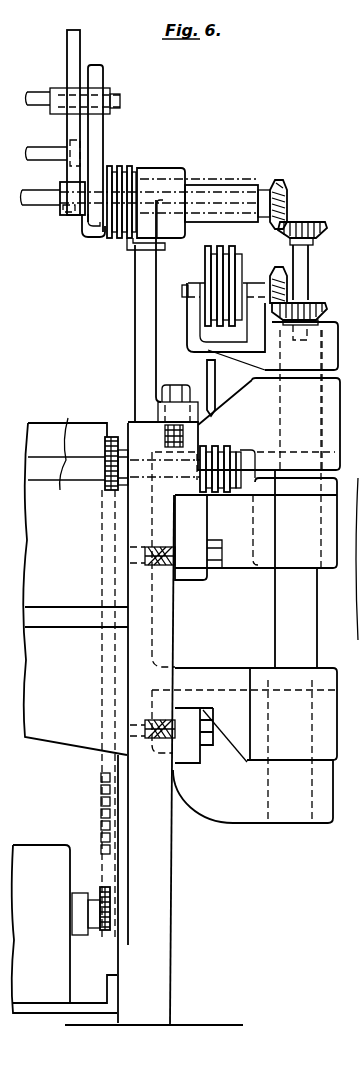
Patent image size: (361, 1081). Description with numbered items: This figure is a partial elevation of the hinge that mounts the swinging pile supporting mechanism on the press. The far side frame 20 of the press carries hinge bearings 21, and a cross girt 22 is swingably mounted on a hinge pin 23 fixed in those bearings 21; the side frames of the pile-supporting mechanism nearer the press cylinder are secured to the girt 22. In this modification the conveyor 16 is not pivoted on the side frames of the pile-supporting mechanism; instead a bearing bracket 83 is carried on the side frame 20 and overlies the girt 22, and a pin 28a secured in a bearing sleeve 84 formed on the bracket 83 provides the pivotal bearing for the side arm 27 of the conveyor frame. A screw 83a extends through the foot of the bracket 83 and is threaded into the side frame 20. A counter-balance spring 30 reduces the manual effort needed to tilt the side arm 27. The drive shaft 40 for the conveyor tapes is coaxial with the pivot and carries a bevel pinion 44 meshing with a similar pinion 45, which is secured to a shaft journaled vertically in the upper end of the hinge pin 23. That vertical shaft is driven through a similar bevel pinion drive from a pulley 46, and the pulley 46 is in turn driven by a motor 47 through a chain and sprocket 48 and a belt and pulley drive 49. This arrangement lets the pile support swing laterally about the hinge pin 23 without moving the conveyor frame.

The conveyor 16 is at (100, 75).
The side arm 27 is at (93, 127).
The counter-balance spring 30 is at (117, 164).
The pin 28a is at (142, 172).
The bearing sleeve 84 is at (165, 170).
The drive shaft 40 is at (44, 203).
The bevel pinion 44 is at (280, 189).
The bevel pinion 45 is at (320, 232).
The pulley 46 is at (221, 256).
The bearing bracket 83 is at (137, 305).
The screw 83a is at (176, 390).
The belt and pulley drive 49 is at (217, 448).
The cross girt 22 is at (75, 673).
The chain and sprocket 48 is at (108, 485).
The hinge bearing 21 is at (266, 560).
The hinge pin 23 is at (306, 617).
The side frame 20 is at (162, 922).
The motor 47 is at (33, 858).